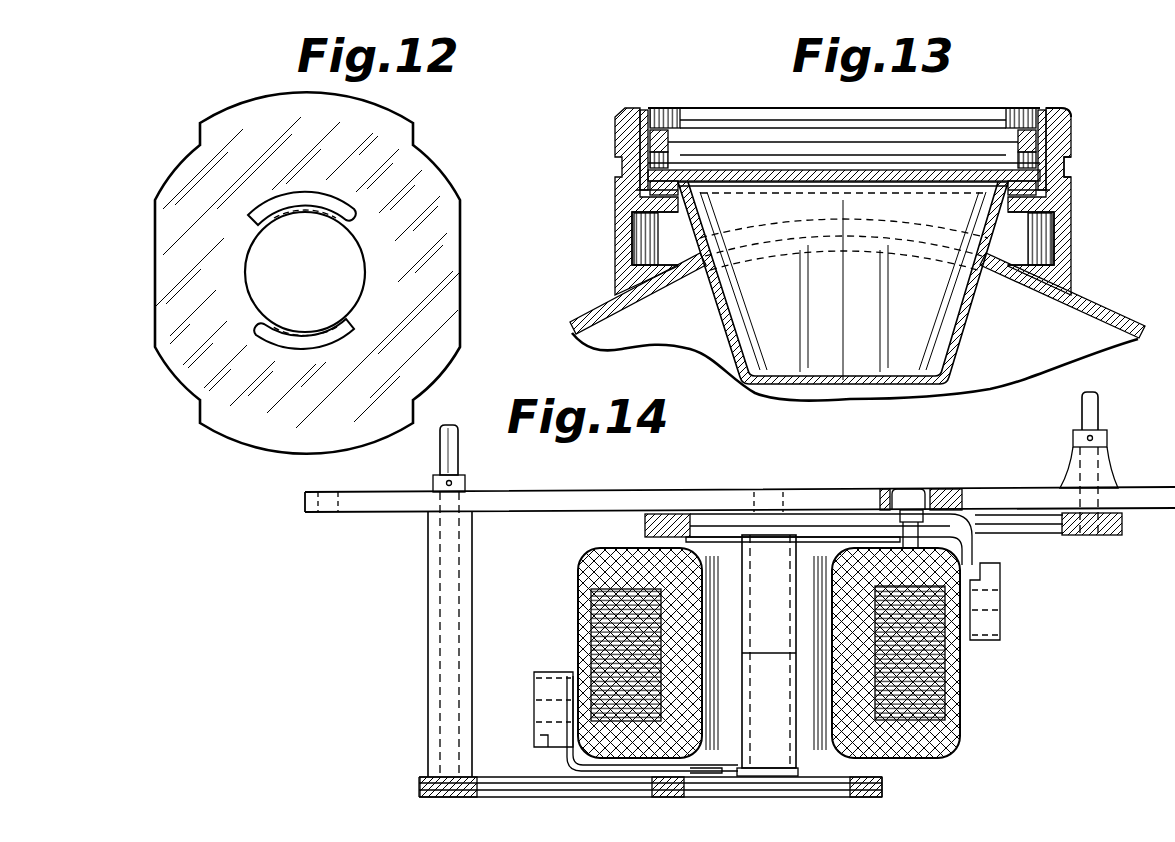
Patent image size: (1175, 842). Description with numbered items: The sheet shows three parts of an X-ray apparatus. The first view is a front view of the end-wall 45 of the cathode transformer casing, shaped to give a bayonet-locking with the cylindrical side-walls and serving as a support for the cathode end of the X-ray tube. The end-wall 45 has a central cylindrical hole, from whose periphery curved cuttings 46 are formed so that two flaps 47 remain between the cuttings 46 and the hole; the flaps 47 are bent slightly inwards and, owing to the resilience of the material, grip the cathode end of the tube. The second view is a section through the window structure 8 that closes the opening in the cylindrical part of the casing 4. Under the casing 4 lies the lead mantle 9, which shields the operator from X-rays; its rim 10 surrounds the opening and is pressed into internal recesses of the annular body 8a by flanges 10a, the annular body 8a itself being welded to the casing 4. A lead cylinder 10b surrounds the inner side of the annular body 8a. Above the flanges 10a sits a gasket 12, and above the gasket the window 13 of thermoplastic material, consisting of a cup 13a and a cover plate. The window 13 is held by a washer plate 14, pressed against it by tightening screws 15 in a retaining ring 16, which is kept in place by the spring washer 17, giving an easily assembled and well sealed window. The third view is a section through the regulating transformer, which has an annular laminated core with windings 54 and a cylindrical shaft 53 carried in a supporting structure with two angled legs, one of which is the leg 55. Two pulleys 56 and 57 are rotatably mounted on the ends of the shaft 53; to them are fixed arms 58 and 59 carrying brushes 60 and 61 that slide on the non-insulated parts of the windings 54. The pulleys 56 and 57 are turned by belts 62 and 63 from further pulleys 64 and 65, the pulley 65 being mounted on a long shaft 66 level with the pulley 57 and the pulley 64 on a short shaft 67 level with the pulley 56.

In FIG. 13, the casing 4 is at (590, 297).
In FIG. 13, the window structure 8 is at (1073, 130).
In FIG. 13, the annular body 8a is at (1063, 109).
In FIG. 13, the lead mantle 9 is at (1118, 311).
In FIG. 13, the rim 10 is at (1043, 247).
In FIG. 13, the flanges 10a is at (1043, 214).
In FIG. 13, the lead cylinder 10b is at (1068, 154).
In FIG. 13, the gasket 12 is at (1052, 190).
In FIG. 13, the window 13 is at (732, 170).
In FIG. 13, the cup 13a is at (968, 336).
In FIG. 13, the washer plate 14 is at (1010, 165).
In FIG. 13, the tightening screws 15 is at (1026, 152).
In FIG. 13, the retaining ring 16 is at (668, 152).
In FIG. 13, the spring washer 17 is at (665, 110).
In FIG. 12, the end-wall 45 is at (436, 167).
In FIG. 12, the curved cuttings 46 is at (333, 197).
In FIG. 12, the flaps 47 is at (300, 208).
In FIG. 14, the cylindrical shaft 53 is at (592, 608).
In FIG. 14, the windings 54 is at (582, 549).
In FIG. 14, the leg 55 is at (838, 490).
In FIG. 14, the pulley 56 is at (654, 514).
In FIG. 14, the pulley 57 is at (690, 795).
In FIG. 14, the arm 58 is at (565, 767).
In FIG. 14, the arm 59 is at (978, 545).
In FIG. 14, the brush 60 is at (1002, 605).
In FIG. 14, the brush 61 is at (534, 690).
In FIG. 14, the belt 62 is at (1046, 534).
In FIG. 14, the belt 63 is at (552, 785).
In FIG. 14, the pulley 64 is at (1090, 538).
In FIG. 14, the pulley 65 is at (463, 800).
In FIG. 14, the long shaft 66 is at (451, 451).
In FIG. 14, the short shaft 67 is at (1099, 411).